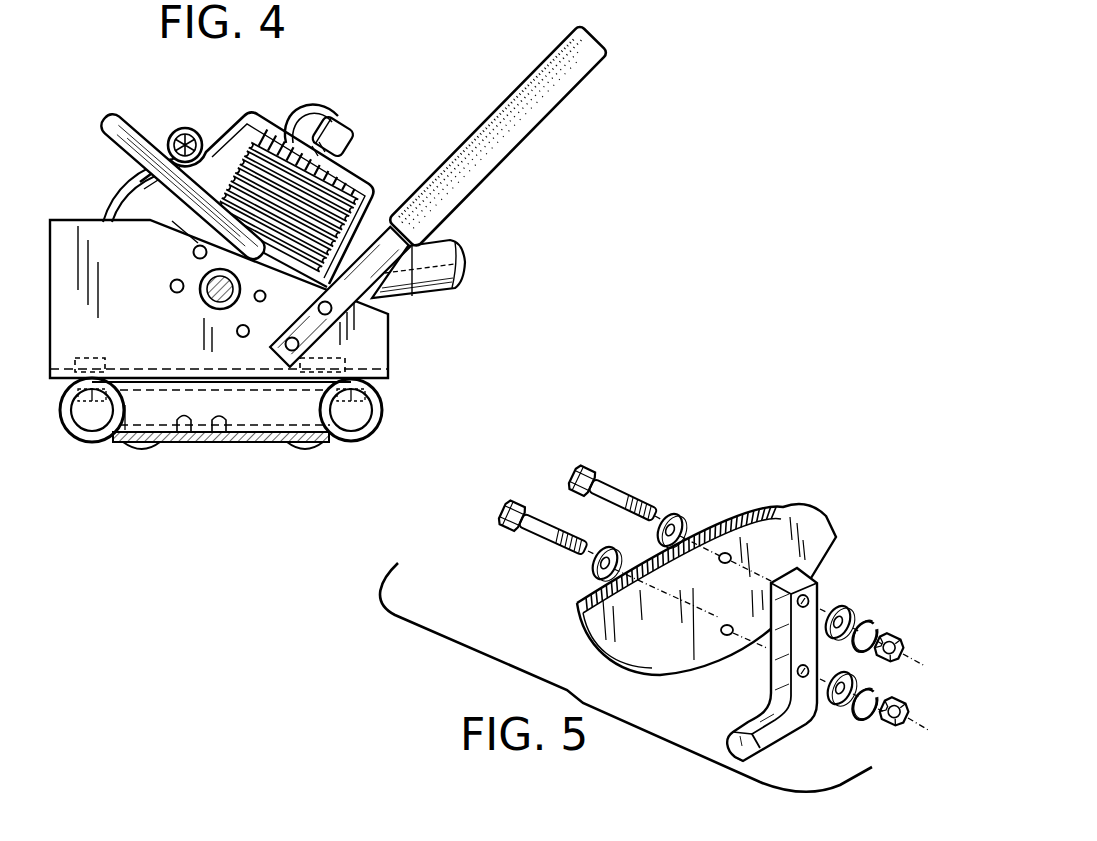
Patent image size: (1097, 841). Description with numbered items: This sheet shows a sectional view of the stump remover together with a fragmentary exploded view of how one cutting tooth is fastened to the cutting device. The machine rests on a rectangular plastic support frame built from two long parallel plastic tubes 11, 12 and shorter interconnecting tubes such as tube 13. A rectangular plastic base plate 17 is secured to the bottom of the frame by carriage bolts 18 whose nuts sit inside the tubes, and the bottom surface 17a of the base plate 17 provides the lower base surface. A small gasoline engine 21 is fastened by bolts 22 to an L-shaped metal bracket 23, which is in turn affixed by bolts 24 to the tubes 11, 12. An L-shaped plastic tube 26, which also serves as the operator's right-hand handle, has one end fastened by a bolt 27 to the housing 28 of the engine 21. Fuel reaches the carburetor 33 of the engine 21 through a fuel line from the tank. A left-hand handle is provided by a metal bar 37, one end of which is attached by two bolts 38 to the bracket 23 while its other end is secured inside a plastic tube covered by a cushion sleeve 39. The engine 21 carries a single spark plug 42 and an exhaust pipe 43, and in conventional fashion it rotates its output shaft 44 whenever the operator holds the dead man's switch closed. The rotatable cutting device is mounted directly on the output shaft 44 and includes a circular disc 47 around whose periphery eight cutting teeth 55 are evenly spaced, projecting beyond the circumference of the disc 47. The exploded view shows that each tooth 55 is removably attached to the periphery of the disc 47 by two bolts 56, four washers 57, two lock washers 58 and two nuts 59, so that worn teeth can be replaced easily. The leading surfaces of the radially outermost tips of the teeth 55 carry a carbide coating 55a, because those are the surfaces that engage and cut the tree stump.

In FIG. 4, the plastic tube 11 is at (380, 404).
In FIG. 4, the plastic tube 12 is at (73, 428).
In FIG. 4, the plastic tube 13 is at (186, 448).
In FIG. 4, the base plate 17 is at (224, 448).
In FIG. 4, the bottom surface 17a is at (262, 448).
In FIG. 4, the carriage bolts 18 is at (134, 450).
In FIG. 4, the engine 21 is at (356, 165).
In FIG. 4, the bolts 22 is at (172, 280).
In FIG. 4, the bracket 23 is at (390, 333).
In FIG. 4, the bolts 24 is at (80, 363).
In FIG. 4, the L-shaped plastic tube 26 is at (190, 127).
In FIG. 4, the bolt 27 is at (172, 133).
In FIG. 4, the housing 28 is at (256, 112).
In FIG. 4, the carburetor 33 is at (462, 258).
In FIG. 4, the metal bar 37 is at (384, 256).
In FIG. 4, the bolts 38 is at (299, 345).
In FIG. 4, the cushion sleeve 39 is at (580, 60).
In FIG. 4, the spark plug 42 is at (338, 112).
In FIG. 4, the exhaust pipe 43 is at (112, 128).
In FIG. 4, the output shaft 44 is at (217, 306).
In FIG. 5, the circular disc 47 is at (608, 630).
In FIG. 5, the cutting tooth 55 is at (771, 677).
In FIG. 5, the carbide coating 55a is at (728, 740).
In FIG. 5, the bolts 56 is at (572, 474).
In FIG. 5, the washers 57 is at (590, 573).
In FIG. 5, the lock washers 58 is at (873, 617).
In FIG. 5, the nuts 59 is at (906, 660).